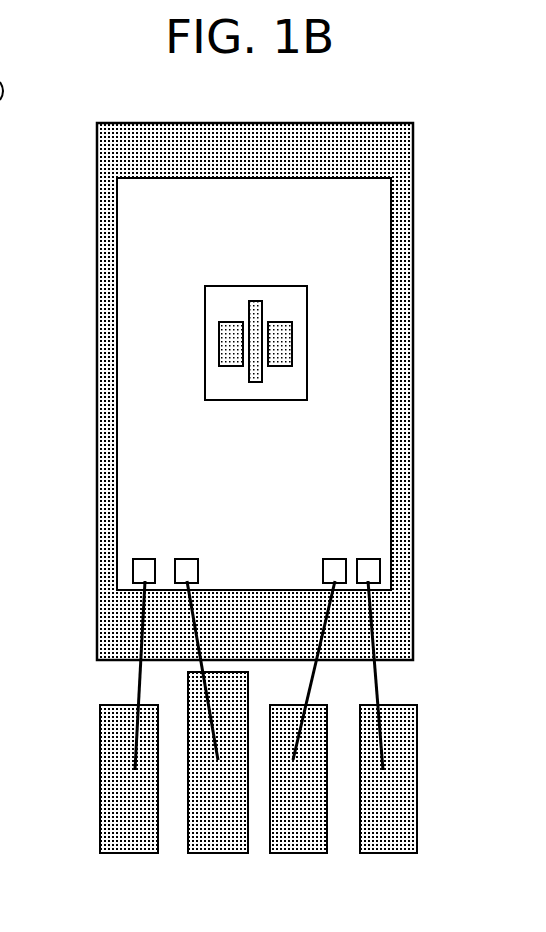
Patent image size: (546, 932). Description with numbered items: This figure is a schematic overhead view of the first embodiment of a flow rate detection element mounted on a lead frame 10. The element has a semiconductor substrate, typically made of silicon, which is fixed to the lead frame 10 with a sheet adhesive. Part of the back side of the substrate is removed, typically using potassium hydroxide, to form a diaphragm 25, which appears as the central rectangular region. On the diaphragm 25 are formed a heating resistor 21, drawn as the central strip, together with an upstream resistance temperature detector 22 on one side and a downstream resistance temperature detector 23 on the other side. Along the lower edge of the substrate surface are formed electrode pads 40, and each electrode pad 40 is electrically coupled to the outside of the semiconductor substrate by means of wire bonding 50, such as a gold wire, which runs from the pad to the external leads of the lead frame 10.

The lead frame 10 is at (376, 165).
The heating resistor 21 is at (253, 304).
The upstream resistance temperature detector 22 is at (229, 345).
The downstream resistance temperature detector 23 is at (283, 346).
The diaphragm 25 is at (294, 302).
The electrode pad 40 is at (135, 590).
The wire bonding 50 is at (142, 692).